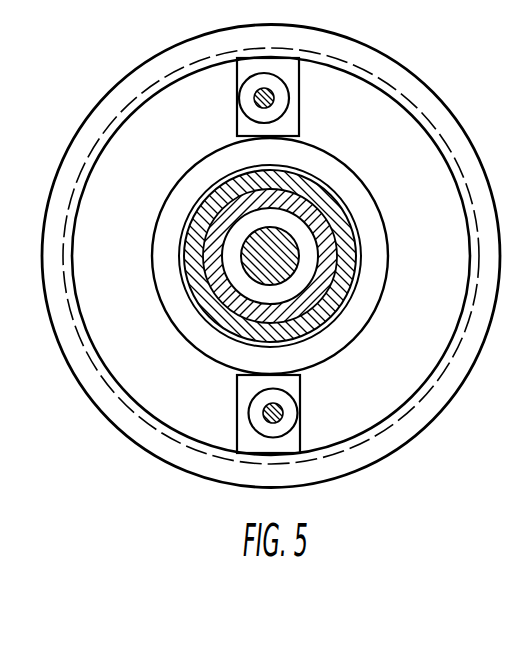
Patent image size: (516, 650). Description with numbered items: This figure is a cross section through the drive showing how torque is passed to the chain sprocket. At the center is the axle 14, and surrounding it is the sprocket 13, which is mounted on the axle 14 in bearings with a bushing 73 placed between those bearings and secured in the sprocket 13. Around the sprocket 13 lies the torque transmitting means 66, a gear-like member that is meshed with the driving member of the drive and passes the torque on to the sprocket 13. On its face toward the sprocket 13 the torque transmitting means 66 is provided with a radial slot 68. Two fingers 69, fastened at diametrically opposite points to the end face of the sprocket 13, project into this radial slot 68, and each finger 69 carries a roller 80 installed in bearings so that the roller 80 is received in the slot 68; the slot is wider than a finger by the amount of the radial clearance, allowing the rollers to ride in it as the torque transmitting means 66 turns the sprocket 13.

The sprocket 13 is at (193, 232).
The axle 14 is at (286, 248).
The torque transmitting means 66 is at (396, 113).
The radial slot 68 is at (299, 85).
The finger 69 is at (283, 405).
The bushing 73 is at (222, 296).
The roller 80 is at (250, 410).